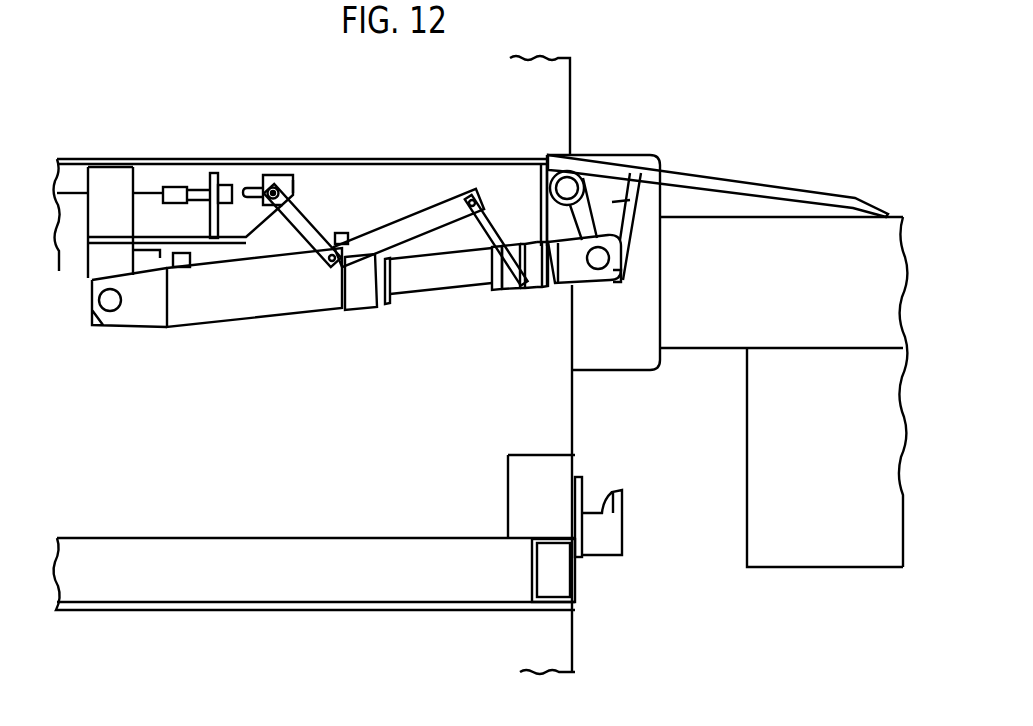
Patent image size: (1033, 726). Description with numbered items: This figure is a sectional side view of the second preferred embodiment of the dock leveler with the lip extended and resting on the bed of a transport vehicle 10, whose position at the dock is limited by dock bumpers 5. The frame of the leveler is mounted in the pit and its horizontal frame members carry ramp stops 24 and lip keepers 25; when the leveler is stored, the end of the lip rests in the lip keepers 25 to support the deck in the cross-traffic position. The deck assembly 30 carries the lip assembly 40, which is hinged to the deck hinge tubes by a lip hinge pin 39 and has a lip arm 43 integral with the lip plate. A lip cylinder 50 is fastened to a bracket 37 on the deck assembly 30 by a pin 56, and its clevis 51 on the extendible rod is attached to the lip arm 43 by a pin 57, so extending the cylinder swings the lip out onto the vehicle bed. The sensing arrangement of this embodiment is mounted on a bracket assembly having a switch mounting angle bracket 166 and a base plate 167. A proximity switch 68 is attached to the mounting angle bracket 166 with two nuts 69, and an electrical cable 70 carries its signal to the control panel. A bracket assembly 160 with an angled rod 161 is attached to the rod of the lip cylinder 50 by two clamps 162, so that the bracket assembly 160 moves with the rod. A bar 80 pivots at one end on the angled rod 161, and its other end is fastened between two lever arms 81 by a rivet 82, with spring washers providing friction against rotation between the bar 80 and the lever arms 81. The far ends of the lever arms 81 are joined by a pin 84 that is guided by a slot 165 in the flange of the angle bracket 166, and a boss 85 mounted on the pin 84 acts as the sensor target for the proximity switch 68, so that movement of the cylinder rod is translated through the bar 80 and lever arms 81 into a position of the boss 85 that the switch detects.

The dock bumper 5 is at (656, 358).
The transport vehicle 10 is at (898, 215).
The ramp stop 24 is at (517, 475).
The lip keeper 25 is at (614, 494).
The deck assembly 30 is at (497, 157).
The bracket 37 is at (100, 267).
The lip hinge pin 39 is at (568, 184).
The lip assembly 40 is at (708, 176).
The lip arm 43 is at (612, 202).
The lip cylinder 50 is at (235, 322).
The clevis 51 is at (585, 278).
The pin 56 is at (92, 308).
The pin 57 is at (607, 259).
The proximity switch 68 is at (184, 206).
The nut 69 is at (222, 174).
The electrical cable 70 is at (141, 190).
The bar 80 is at (410, 214).
The lever arm 81 is at (312, 248).
The rivet 82 is at (343, 312).
The pin 84 is at (272, 177).
The boss 85 is at (302, 180).
The bracket assembly 160 is at (510, 288).
The angled rod 161 is at (490, 231).
The clamp 162 is at (540, 288).
The slot 165 is at (242, 187).
The switch mounting angle bracket 166 is at (300, 194).
The base plate 167 is at (215, 244).